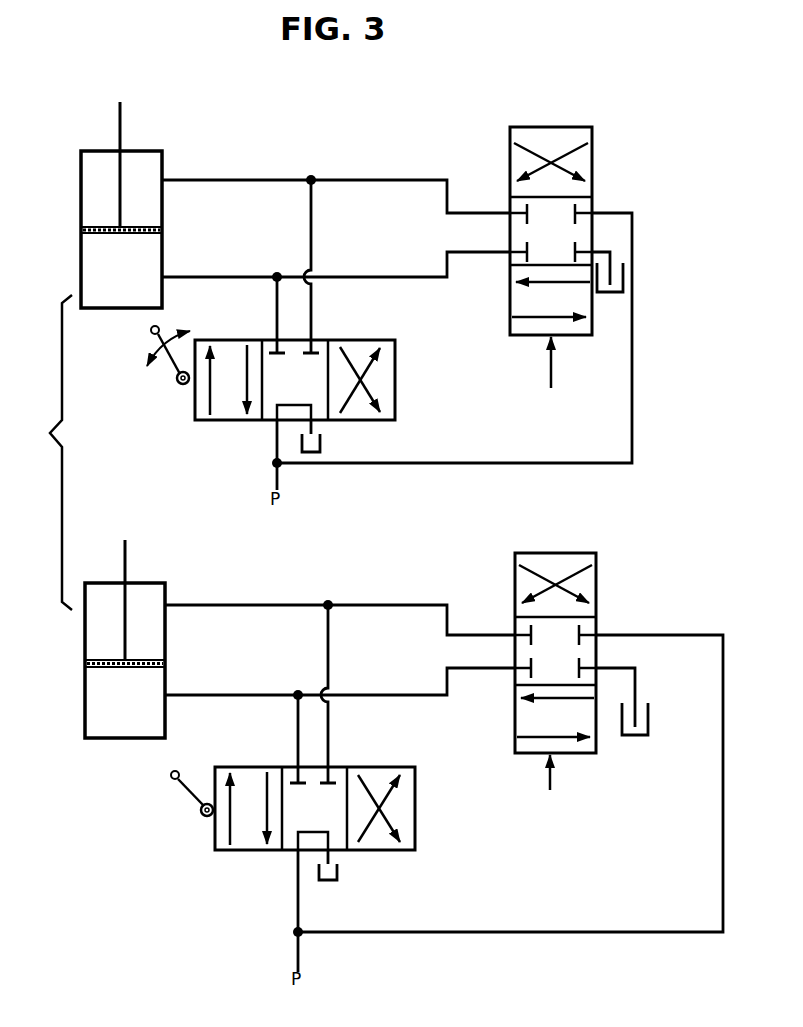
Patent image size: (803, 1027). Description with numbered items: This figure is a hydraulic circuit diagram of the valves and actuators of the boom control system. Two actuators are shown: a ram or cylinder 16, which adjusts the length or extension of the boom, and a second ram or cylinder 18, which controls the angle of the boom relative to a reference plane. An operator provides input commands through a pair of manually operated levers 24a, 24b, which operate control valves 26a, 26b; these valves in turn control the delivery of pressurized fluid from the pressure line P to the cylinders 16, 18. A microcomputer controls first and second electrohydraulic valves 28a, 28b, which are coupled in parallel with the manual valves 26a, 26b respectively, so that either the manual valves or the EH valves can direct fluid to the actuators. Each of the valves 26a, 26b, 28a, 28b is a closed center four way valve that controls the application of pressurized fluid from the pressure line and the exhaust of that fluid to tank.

The cylinder 16 is at (108, 310).
The cylinder 18 is at (108, 732).
The lever 24a is at (167, 354).
The lever 24b is at (192, 797).
The control valve 26a is at (230, 420).
The control valve 26b is at (240, 850).
The electrohydraulic valve 28a is at (515, 325).
The electrohydraulic valve 28b is at (522, 720).